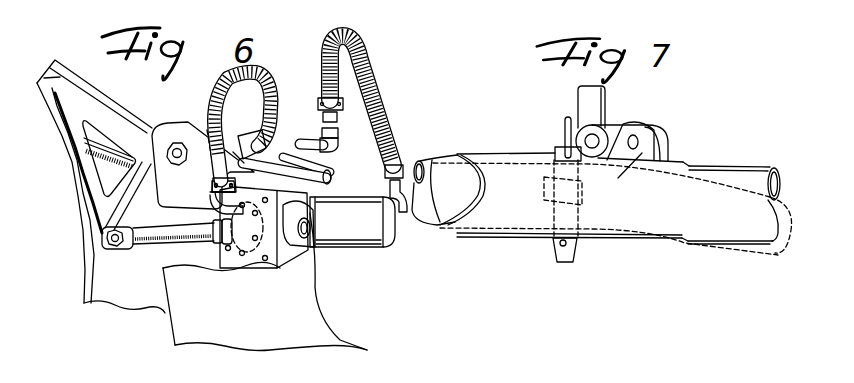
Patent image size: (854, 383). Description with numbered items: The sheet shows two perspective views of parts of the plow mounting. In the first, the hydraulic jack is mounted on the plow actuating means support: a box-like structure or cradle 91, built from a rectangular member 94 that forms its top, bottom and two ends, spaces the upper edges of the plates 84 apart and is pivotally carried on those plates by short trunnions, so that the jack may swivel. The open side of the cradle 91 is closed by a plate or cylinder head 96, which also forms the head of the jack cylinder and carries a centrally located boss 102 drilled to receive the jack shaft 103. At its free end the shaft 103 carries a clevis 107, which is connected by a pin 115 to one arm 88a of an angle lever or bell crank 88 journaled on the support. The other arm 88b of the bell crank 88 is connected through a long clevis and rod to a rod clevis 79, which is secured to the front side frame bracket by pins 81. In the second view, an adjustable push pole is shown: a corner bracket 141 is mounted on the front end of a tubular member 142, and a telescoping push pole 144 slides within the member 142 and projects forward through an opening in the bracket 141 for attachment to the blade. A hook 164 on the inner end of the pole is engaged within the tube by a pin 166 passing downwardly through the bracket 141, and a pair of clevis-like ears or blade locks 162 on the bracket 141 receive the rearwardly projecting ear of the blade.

In FIG. 6, the bell crank 88 is at (149, 113).
In FIG. 6, the bell crank arm 88a is at (102, 203).
In FIG. 6, the bell crank arm 88b is at (96, 198).
In FIG. 6, the pin 115 is at (104, 245).
In FIG. 6, the clevis 107 is at (160, 233).
In FIG. 6, the shaft 103 is at (168, 229).
In FIG. 6, the box-like structure (cradle) 91 is at (213, 262).
In FIG. 6, the boss 102 is at (267, 232).
In FIG. 6, the plate (cylinder head) 96 is at (278, 227).
In FIG. 6, the rectangular member 94 is at (296, 204).
In FIG. 6, the plate 84 is at (292, 345).
In FIG. 7, the clevis 79 is at (583, 108).
In FIG. 7, the pin 81 is at (566, 137).
In FIG. 7, the clevis-like ear (blade lock) 162 is at (624, 126).
In FIG. 7, the push pole 144 is at (425, 212).
In FIG. 7, the tubular member 142 is at (447, 217).
In FIG. 7, the angle bracket (corner bracket) 141 is at (497, 215).
In FIG. 7, the hook 164 is at (543, 203).
In FIG. 7, the pin 166 is at (577, 257).